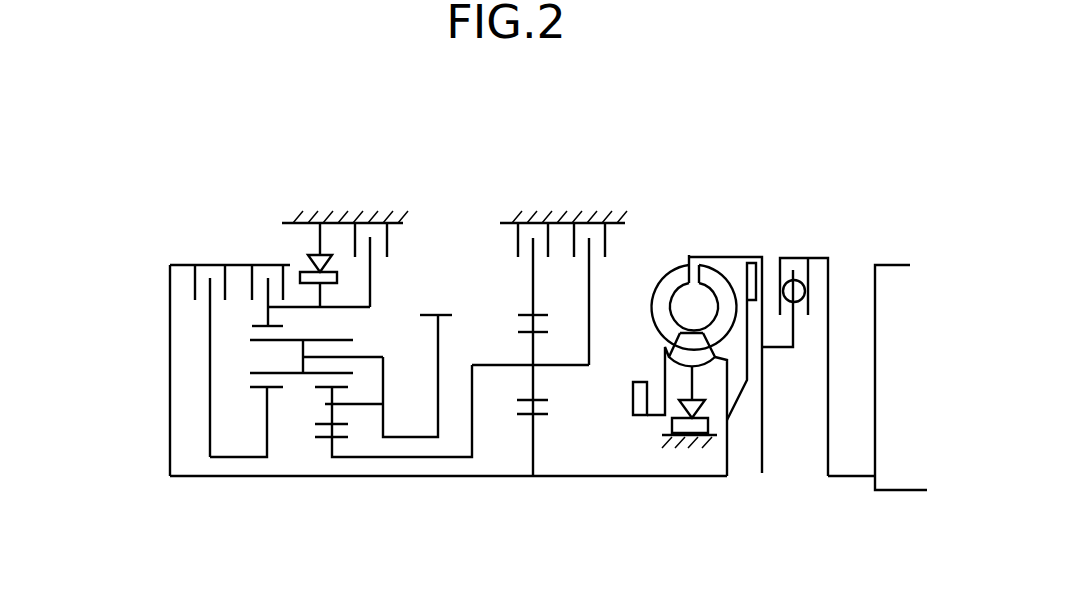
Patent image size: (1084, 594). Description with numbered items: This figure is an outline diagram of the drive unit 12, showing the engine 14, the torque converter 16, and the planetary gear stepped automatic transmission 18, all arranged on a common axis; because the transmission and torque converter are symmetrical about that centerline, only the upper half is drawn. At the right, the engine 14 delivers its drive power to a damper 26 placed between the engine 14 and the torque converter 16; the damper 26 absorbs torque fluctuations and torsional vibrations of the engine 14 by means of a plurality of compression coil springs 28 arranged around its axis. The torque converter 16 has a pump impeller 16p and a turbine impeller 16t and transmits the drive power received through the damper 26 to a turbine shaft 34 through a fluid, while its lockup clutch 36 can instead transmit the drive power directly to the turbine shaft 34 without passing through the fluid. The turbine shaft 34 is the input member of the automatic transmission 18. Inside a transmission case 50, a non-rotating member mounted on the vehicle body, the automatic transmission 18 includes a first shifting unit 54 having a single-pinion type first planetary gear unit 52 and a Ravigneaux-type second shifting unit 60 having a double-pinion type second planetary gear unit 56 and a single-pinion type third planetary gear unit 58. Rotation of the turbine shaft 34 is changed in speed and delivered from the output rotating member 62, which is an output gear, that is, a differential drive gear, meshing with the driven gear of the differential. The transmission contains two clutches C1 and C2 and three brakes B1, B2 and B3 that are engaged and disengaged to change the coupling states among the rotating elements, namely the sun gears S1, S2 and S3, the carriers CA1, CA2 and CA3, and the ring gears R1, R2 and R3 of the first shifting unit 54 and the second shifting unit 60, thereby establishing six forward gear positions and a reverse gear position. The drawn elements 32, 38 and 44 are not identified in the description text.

The drive unit 12 is at (784, 118).
The engine 14 is at (898, 477).
The torque converter 16 is at (677, 200).
The pump impeller 16p is at (653, 317).
The turbine impeller 16t is at (712, 277).
The automatic transmission 18 is at (344, 135).
The damper 26 is at (792, 230).
The compression coil springs 28 is at (798, 303).
The counter shaft 32 is at (848, 476).
The turbine shaft 34 is at (625, 476).
The lockup clutch 36 is at (757, 280).
The case housing 38 is at (729, 270).
The rotational speed sensor (resolver) 44 is at (637, 381).
The transmission case 50 is at (347, 213).
The first planetary gear unit 52 is at (527, 497).
The first shifting unit 54 is at (513, 187).
The second planetary gear unit 56 is at (325, 497).
The third planetary gear unit 58 is at (258, 497).
The second shifting unit 60 is at (277, 187).
The output rotating member 62 is at (443, 310).
The first brake B1 is at (607, 294).
The second brake B2 is at (388, 265).
The third brake B3 is at (515, 269).
The first clutch C1 is at (208, 347).
The second clutch C2 is at (309, 282).
The first carrier CA1 is at (550, 367).
The second carrier CA2 is at (383, 375).
The third carrier CA3 is at (381, 371).
The first ring gear R1 is at (518, 318).
The second ring gear R2 is at (257, 327).
The third ring gear R3 is at (180, 342).
The first sun gear S1 is at (543, 407).
The second sun gear S2 is at (317, 427).
The third sun gear S3 is at (257, 380).